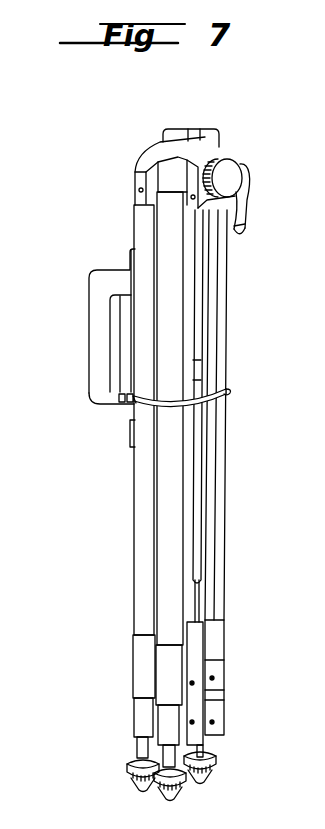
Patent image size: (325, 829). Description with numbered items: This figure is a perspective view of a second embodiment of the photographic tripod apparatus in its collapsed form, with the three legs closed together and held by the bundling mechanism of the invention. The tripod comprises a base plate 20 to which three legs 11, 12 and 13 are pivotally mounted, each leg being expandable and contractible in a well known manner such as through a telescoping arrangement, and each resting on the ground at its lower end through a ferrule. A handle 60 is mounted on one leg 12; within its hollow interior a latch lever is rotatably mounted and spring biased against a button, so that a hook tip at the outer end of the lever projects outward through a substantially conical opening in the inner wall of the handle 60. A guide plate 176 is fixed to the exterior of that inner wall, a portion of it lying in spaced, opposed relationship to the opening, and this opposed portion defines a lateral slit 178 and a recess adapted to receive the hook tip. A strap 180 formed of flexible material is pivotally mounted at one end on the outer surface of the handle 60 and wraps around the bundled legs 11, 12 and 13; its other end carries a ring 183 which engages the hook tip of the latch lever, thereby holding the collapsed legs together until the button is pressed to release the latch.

The leg 11 is at (224, 481).
The leg 12 is at (145, 539).
The leg 13 is at (165, 612).
The base plate 20 is at (227, 161).
The handle 60 is at (82, 328).
The guide plate 176 is at (121, 398).
The lateral slit 178 is at (129, 401).
The strap 180 is at (233, 392).
The ring 183 is at (137, 403).